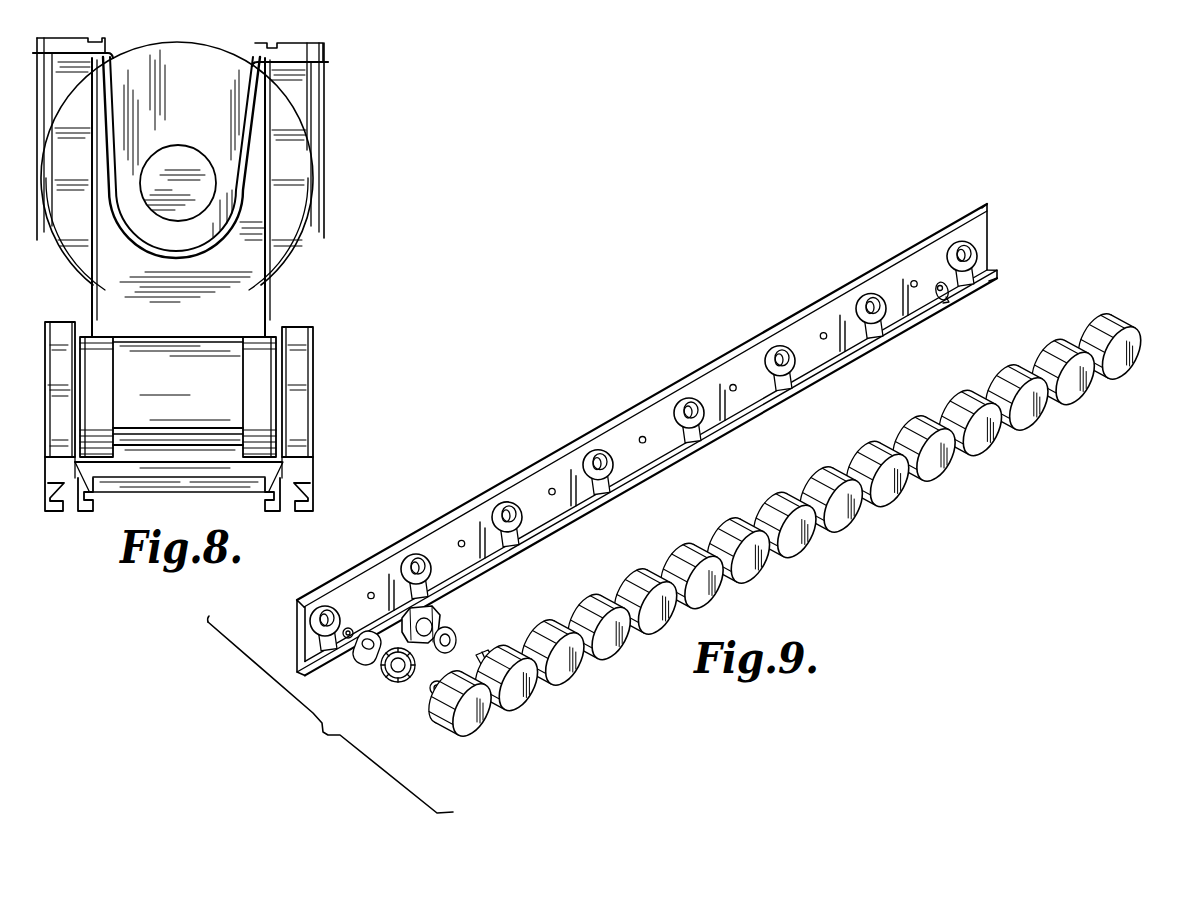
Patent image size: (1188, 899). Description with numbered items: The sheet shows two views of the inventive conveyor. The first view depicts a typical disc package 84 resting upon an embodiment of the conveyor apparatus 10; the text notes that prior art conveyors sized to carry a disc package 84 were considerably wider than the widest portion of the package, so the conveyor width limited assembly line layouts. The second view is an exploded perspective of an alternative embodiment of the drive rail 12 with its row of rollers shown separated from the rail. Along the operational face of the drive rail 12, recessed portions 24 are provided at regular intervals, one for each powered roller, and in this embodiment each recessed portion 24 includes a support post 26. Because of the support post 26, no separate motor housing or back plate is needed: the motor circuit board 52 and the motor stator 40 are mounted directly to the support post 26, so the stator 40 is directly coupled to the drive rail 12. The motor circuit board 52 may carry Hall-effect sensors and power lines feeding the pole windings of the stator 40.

In FIG. 8, the conveyor apparatus 10 is at (212, 272).
In FIG. 8, the disc package 84 is at (348, 96).
In FIG. 9, the drive rail 12 is at (646, 379).
In FIG. 9, the recessed portion 24 is at (507, 506).
In FIG. 9, the support post 26 is at (488, 510).
In FIG. 9, the motor circuit board 52 is at (356, 666).
In FIG. 9, the motor stator 40 is at (393, 678).